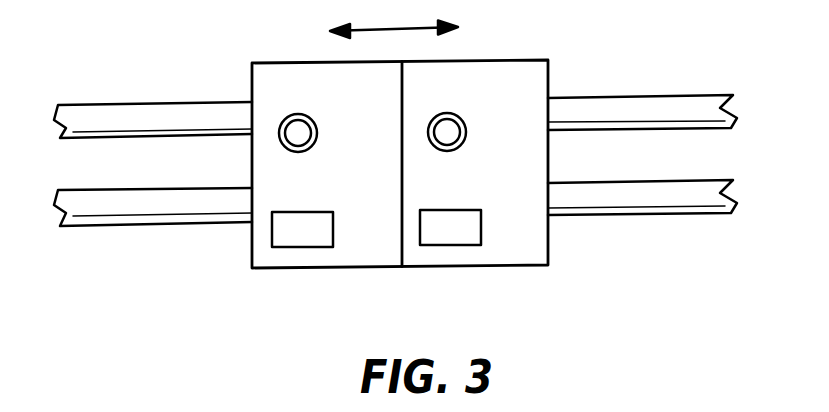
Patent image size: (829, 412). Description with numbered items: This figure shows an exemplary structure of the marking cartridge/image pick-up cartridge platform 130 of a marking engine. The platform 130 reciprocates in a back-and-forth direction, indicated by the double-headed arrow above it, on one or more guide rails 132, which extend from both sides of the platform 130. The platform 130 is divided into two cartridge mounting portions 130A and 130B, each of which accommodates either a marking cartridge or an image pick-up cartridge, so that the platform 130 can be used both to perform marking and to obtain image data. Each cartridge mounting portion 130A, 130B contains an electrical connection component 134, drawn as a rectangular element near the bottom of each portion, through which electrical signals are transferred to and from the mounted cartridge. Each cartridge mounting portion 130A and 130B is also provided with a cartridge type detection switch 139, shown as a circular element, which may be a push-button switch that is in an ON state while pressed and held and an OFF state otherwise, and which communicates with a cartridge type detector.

The marking cartridge/image pick-up cartridge platform 130 is at (500, 60).
The cartridge mounting portion 130A is at (365, 237).
The cartridge mounting portion 130B is at (517, 228).
The guide rails 132 is at (675, 93).
The electrical connection component 134 is at (305, 248).
The cartridge type detection switch 139 is at (297, 113).